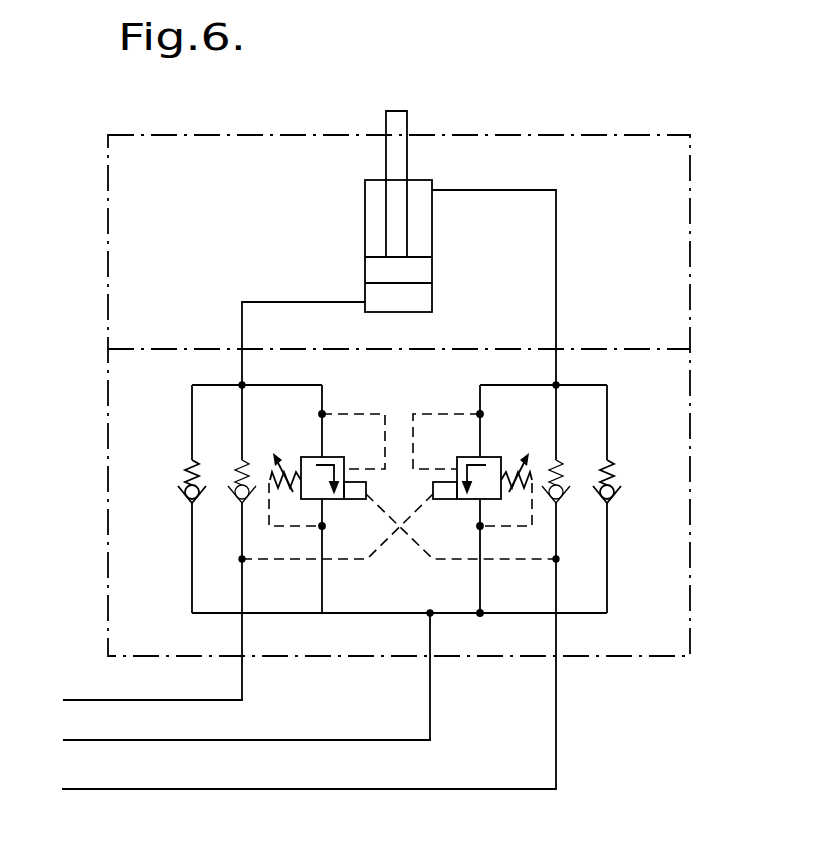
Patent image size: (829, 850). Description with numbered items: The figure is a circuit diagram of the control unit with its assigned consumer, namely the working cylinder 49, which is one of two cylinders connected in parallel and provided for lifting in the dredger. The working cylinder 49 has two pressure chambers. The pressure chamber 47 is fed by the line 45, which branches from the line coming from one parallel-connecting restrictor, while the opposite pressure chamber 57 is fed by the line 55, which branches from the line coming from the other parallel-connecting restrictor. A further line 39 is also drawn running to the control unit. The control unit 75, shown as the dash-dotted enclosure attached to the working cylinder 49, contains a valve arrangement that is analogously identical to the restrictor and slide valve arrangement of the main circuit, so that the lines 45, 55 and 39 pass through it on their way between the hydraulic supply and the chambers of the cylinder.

The conduit 39 is at (135, 740).
The line 45 is at (556, 300).
The pressure chamber 47 is at (428, 186).
The working cylinder 49 is at (366, 236).
The line 55 is at (242, 330).
The pressure chamber 57 is at (430, 300).
The control unit 75 is at (691, 478).